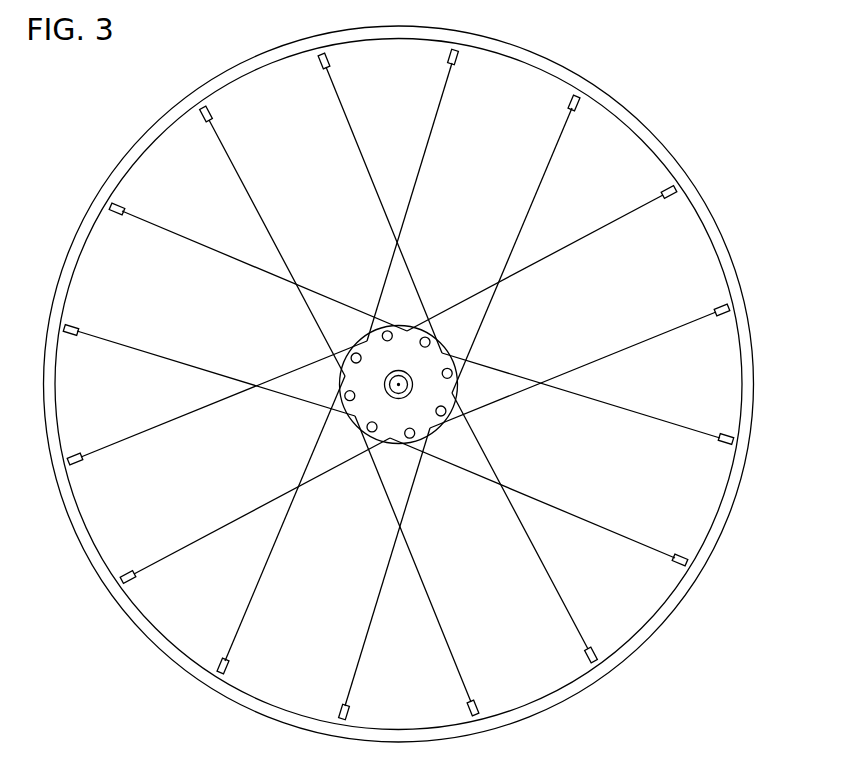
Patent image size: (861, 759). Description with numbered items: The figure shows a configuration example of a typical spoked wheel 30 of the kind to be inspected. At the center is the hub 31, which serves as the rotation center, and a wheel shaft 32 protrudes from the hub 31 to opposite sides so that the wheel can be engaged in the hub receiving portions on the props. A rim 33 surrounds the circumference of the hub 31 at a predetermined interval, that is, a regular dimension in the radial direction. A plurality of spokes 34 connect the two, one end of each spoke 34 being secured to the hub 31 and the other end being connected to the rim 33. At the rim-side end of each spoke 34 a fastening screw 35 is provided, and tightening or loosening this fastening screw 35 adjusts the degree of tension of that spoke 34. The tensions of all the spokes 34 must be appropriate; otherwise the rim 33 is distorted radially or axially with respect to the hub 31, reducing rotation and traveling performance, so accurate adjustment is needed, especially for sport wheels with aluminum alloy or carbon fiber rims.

The spoked wheel 30 is at (692, 137).
The hub 31 is at (446, 414).
The wheel shaft 32 is at (393, 378).
The rim 33 is at (754, 340).
The spoke 34 is at (386, 215).
The fastening screw 35 is at (722, 432).